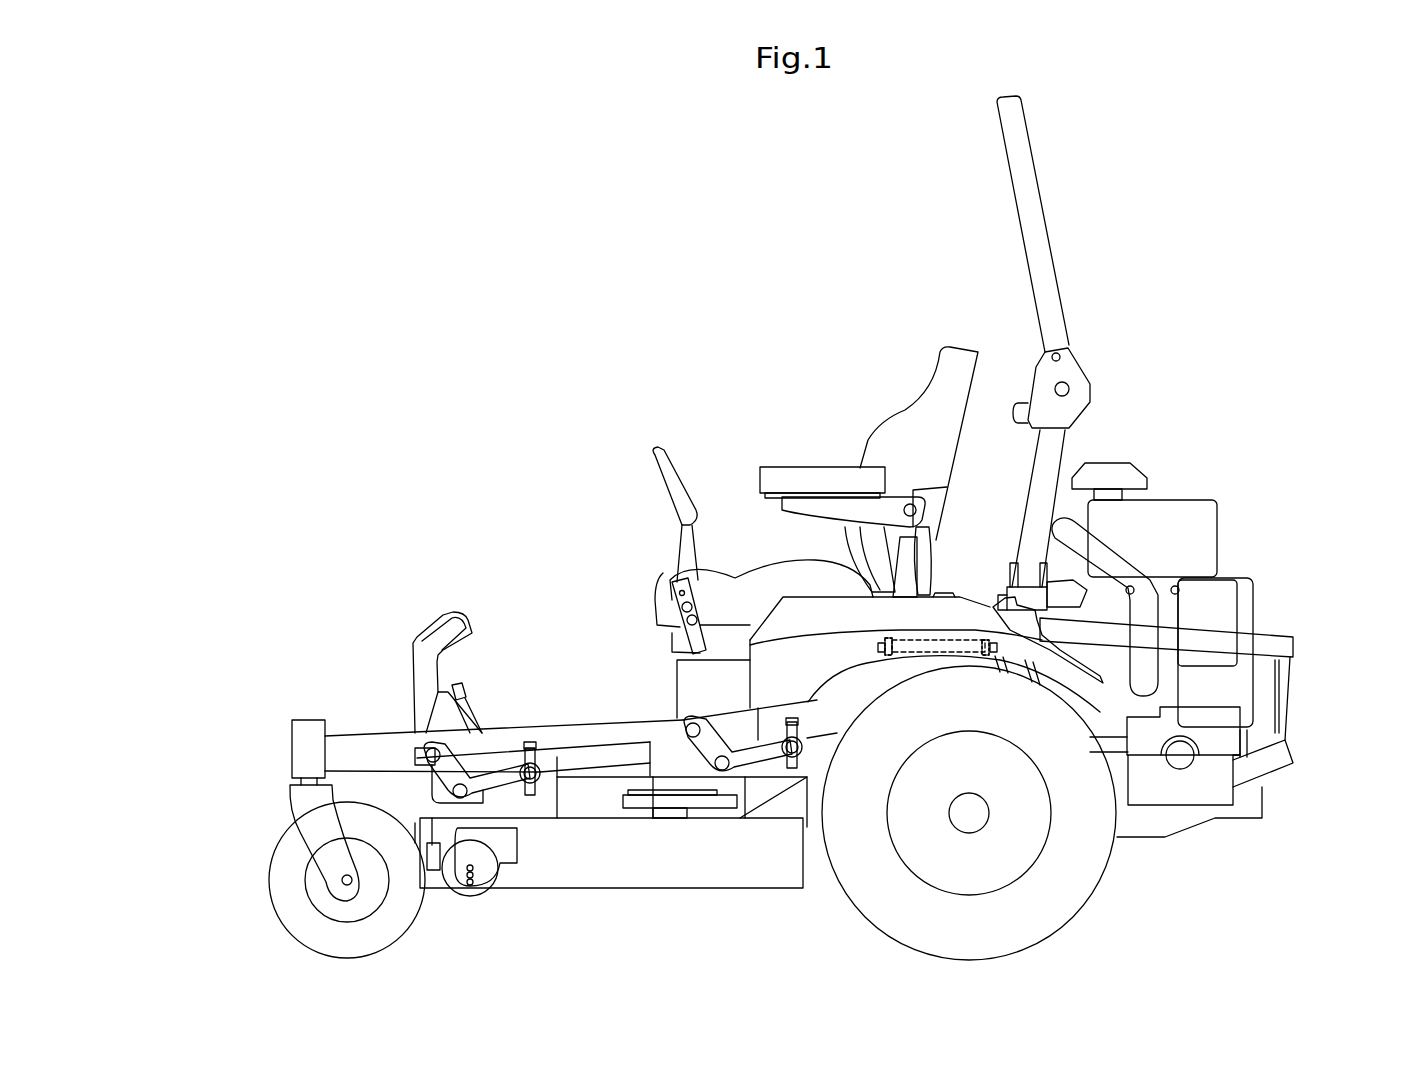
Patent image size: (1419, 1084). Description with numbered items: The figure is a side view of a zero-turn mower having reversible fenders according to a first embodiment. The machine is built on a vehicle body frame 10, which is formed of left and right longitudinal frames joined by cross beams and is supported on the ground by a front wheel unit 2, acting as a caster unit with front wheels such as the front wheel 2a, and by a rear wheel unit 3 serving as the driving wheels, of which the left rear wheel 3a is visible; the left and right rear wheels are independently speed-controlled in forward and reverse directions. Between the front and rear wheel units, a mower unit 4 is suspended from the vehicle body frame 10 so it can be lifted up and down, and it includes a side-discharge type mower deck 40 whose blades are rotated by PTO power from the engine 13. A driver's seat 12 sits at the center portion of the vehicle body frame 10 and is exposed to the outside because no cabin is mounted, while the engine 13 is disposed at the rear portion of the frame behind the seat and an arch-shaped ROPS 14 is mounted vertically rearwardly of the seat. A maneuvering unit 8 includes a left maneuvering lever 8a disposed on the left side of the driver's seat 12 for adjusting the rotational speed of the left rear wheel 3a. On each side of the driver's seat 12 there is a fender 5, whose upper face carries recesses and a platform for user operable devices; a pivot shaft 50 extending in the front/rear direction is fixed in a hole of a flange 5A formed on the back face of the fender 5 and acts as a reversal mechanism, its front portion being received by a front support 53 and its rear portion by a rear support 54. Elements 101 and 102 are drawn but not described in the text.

The front wheel 2a is at (288, 839).
The front wheel unit 2 is at (285, 885).
The left rear wheel 3a is at (1008, 808).
The rear wheel unit 3 is at (1072, 883).
The mower unit 4 is at (611, 841).
The mower deck 40 is at (627, 850).
The fender 5 is at (805, 590).
The flange 5A is at (940, 640).
The left maneuvering lever 8a is at (651, 503).
The maneuvering unit 8 is at (657, 460).
The vehicle body frame 10 is at (372, 718).
The driver's seat 12 is at (863, 447).
The engine 13 is at (1258, 607).
The ROPS 14 is at (1033, 163).
The pivot shaft 50 is at (885, 653).
The front support 53 is at (888, 640).
The rear support 54 is at (986, 655).
The step / body panel 101 is at (703, 687).
The engine 102 is at (1208, 640).